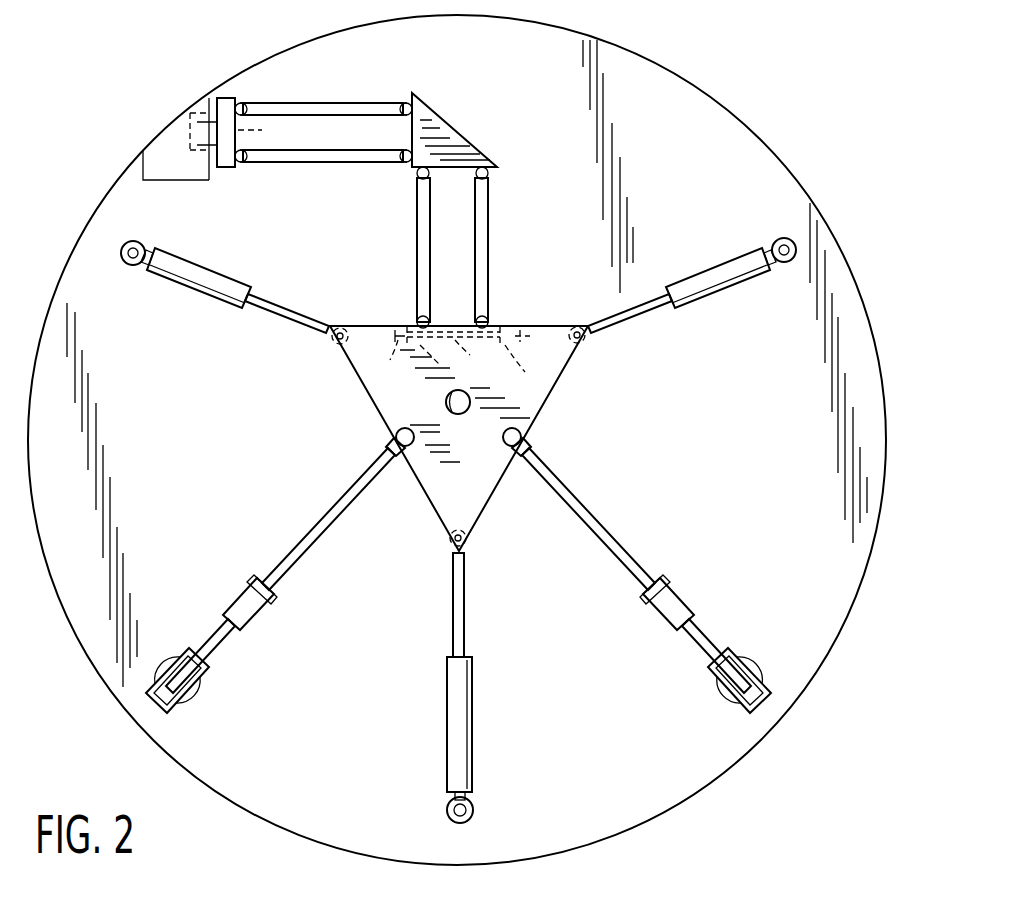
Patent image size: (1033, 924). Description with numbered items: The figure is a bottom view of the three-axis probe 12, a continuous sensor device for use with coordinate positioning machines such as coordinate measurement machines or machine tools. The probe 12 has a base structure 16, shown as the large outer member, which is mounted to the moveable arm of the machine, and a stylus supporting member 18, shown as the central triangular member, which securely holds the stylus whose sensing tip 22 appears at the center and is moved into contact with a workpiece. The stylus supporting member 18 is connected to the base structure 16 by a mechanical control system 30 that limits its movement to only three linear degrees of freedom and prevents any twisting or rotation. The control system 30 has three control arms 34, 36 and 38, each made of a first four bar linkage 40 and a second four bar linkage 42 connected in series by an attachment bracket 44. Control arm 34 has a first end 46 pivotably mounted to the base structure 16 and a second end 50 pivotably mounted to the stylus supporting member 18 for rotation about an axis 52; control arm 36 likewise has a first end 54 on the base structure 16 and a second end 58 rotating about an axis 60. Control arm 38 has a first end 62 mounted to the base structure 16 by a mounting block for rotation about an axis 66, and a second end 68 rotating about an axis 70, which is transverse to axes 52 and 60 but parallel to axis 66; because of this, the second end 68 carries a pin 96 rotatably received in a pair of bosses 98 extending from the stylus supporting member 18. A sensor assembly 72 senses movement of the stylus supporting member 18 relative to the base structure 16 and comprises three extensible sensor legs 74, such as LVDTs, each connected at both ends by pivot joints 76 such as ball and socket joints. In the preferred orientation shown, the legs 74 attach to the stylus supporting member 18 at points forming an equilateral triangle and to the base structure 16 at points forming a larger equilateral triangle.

The probe 12 is at (748, 106).
The base structure 16 is at (648, 72).
The stylus supporting member 18 is at (560, 385).
The sensing tip 22 is at (447, 405).
The mechanical control system 30 is at (526, 186).
The control arm 34 is at (663, 522).
The control arm 36 is at (283, 625).
The control arm 38 is at (434, 89).
The first four bar linkage 40 is at (305, 157).
The second four bar linkage 42 is at (417, 255).
The attachment bracket 44 is at (448, 135).
The first end 46 is at (760, 665).
The second end 50 is at (530, 437).
The axis 52 is at (508, 445).
The first end 54 is at (190, 698).
The second end 58 is at (393, 433).
The axis 60 is at (410, 448).
The first end 62 is at (215, 142).
The axis 66 is at (262, 130).
The second end 68 is at (503, 322).
The axis 70 is at (538, 325).
The sensor assembly 72 is at (262, 340).
The sensor leg 74 is at (170, 275).
The pivot joint 76 is at (142, 245).
The pin 96 is at (455, 345).
The boss 98 is at (522, 370).